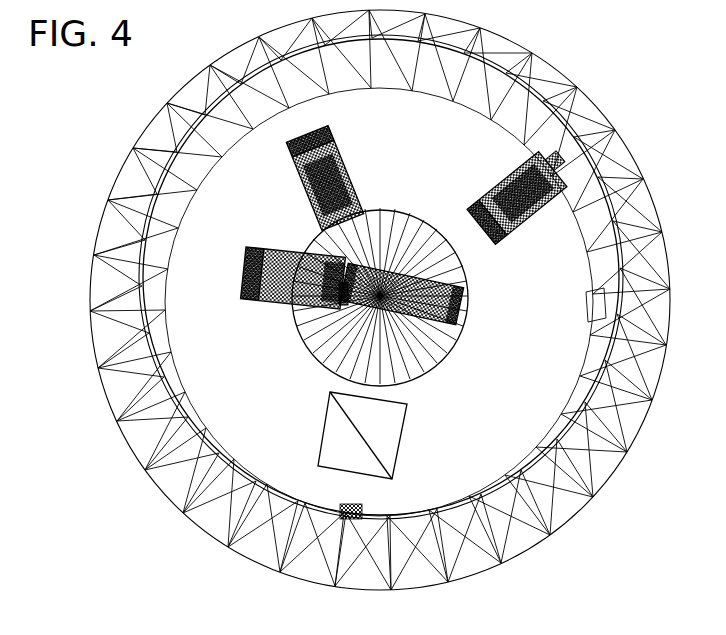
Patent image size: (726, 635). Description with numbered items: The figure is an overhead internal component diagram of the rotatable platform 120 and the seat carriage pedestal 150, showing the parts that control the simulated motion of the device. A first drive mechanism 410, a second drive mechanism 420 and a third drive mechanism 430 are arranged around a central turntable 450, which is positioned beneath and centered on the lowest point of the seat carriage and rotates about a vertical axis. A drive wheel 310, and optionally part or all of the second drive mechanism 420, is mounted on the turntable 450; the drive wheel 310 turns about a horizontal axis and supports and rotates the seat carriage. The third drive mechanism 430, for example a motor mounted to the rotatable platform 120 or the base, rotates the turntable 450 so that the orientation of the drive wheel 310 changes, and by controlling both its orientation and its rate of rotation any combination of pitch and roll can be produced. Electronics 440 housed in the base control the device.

The rotatable platform 120 is at (582, 82).
The seat carriage pedestal 150 is at (504, 58).
The drive wheel 310 is at (455, 320).
The first drive mechanism 410 is at (533, 250).
The second drive mechanism 420 is at (278, 233).
The third drive mechanism 430 is at (356, 152).
The electronics 440 is at (323, 447).
The turntable 450 is at (310, 352).